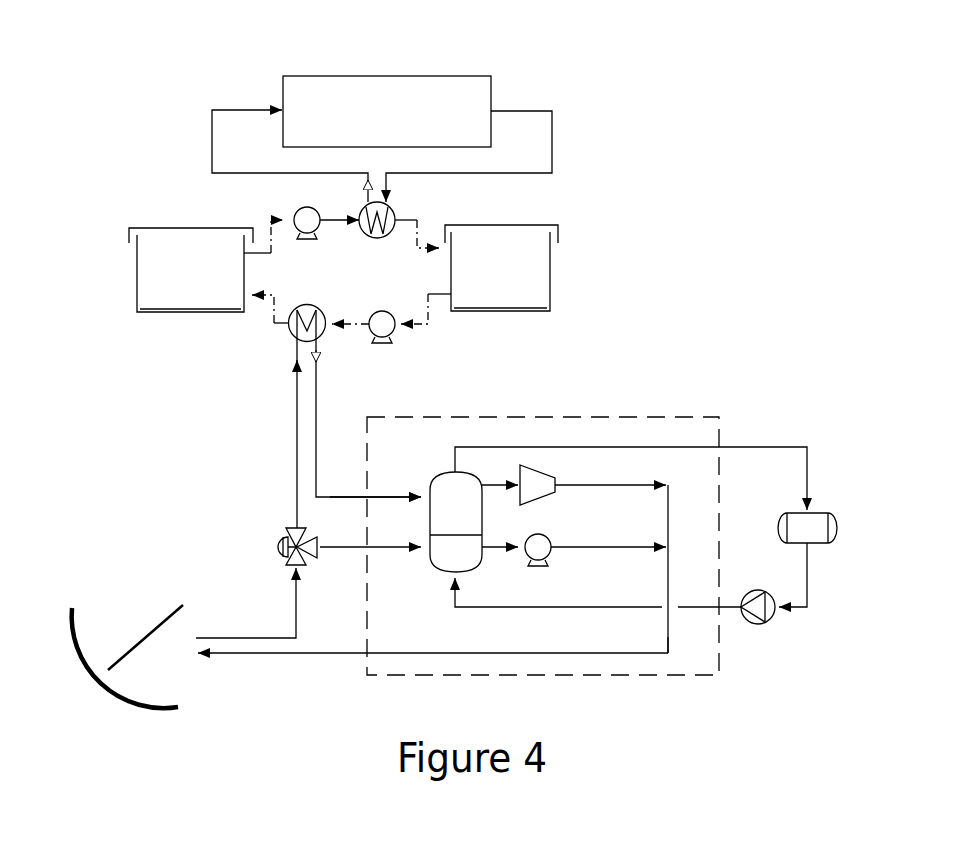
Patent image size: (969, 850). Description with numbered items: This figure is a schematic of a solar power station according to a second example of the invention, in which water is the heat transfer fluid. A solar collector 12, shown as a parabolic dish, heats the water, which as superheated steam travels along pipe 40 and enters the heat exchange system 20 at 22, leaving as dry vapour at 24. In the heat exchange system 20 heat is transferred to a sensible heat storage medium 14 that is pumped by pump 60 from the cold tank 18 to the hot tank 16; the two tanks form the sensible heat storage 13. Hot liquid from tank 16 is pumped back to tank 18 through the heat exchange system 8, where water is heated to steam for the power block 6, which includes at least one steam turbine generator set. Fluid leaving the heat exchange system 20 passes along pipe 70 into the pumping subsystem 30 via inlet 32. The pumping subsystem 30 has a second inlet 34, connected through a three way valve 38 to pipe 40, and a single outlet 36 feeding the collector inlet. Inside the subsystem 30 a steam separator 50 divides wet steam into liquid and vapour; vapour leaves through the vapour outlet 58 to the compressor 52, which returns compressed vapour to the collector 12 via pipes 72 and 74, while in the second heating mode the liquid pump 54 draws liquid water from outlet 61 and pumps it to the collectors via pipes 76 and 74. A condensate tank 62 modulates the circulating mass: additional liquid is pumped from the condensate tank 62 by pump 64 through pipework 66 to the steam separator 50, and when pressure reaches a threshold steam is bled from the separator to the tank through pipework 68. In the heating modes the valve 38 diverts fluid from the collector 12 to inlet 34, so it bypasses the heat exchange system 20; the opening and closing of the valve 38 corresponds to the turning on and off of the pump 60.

The power block 6 is at (467, 90).
The heat exchange system 8 is at (388, 217).
The solar collector 12 is at (115, 685).
The sensible heat storage 13 is at (157, 222).
The sensible heat storage medium 14 is at (162, 298).
The hot tank 16 is at (136, 273).
The cold tank 18 is at (551, 270).
The heat exchange system 20 is at (290, 334).
The heat exchange system inlet 22 is at (297, 352).
The heat exchange system outlet 24 is at (321, 353).
The pumping subsystem 30 is at (633, 418).
The inlet 32 is at (398, 493).
The inlet 34 is at (410, 552).
The outlet 36 is at (672, 638).
The three way valve 38 is at (280, 538).
The pipe 40 is at (230, 638).
The steam separator 50 is at (473, 565).
The compressor 52 is at (545, 468).
The liquid pump 54 is at (538, 550).
The vapour outlet 58 is at (498, 477).
The pump 60 is at (384, 338).
The outlet 61 is at (498, 550).
The condensate tank 62 is at (800, 520).
The pump 64 is at (773, 617).
The pipework 66 is at (707, 607).
The pipework 68 is at (777, 447).
The pipe 70 is at (340, 497).
The pipe 72 is at (643, 475).
The pipe 74 is at (472, 655).
The pipe 76 is at (655, 548).